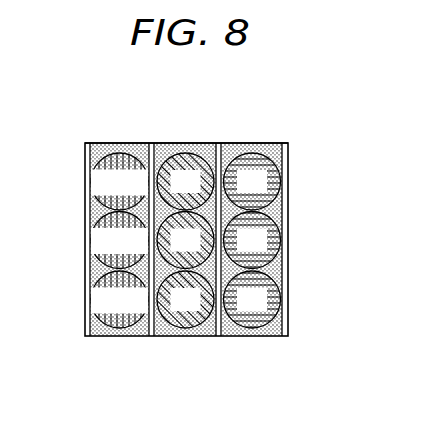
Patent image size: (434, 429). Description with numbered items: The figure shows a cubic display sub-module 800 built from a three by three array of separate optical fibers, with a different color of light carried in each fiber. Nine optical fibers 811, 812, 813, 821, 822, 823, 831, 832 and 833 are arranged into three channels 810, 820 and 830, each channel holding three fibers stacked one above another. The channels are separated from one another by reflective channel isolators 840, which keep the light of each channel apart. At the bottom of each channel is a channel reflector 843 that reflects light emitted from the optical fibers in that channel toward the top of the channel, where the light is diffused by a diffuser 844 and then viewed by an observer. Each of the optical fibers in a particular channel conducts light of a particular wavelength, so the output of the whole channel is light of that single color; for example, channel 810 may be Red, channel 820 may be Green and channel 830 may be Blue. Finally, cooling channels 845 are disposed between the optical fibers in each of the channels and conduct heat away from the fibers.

The cable assembly 800 is at (78, 110).
The channel 810 is at (88, 341).
The optical fiber 811 is at (119, 299).
The optical fiber 812 is at (119, 240).
The optical fiber 813 is at (119, 181).
The channel 820 is at (157, 341).
The optical fiber 821 is at (185, 299).
The optical fiber 822 is at (185, 240).
The optical fiber 823 is at (185, 181).
The channel 830 is at (222, 341).
The optical fiber 831 is at (252, 299).
The optical fiber 832 is at (252, 240).
The optical fiber 833 is at (252, 181).
The reflective channel isolator 840 is at (290, 320).
The channel reflector 843 is at (96, 317).
The diffuser 844 is at (260, 143).
The cooling channel 845 is at (272, 205).